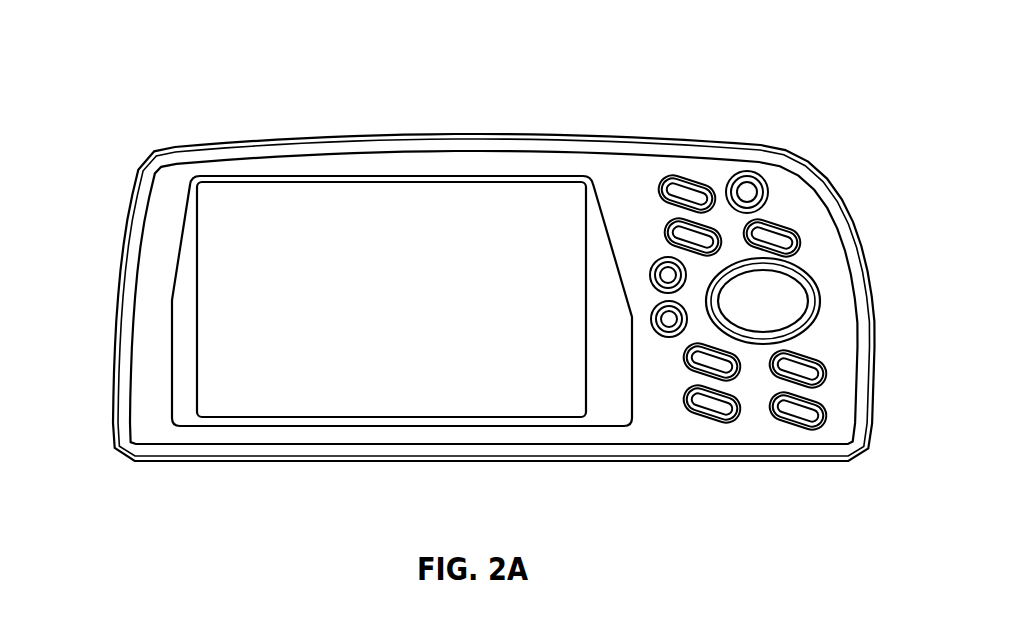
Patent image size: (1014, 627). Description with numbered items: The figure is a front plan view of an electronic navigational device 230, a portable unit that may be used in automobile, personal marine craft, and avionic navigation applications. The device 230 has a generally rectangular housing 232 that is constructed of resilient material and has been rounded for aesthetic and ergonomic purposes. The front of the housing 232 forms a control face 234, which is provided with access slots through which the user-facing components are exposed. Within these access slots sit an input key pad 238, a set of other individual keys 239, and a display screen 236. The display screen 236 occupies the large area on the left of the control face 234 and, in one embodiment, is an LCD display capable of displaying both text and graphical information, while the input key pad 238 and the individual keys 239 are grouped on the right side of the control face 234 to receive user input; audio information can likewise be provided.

The electronic navigational device 230 is at (122, 60).
The housing 232 is at (283, 138).
The control face 234 is at (407, 158).
The display screen 236 is at (293, 410).
The input key pad 238 is at (800, 310).
The individual keys 239 is at (795, 235).